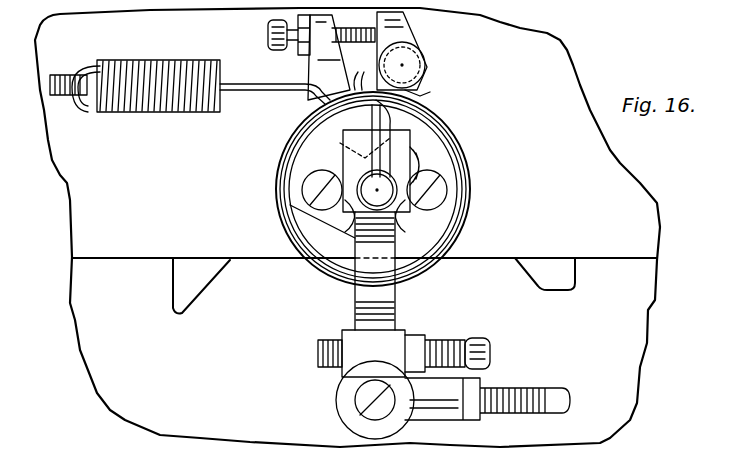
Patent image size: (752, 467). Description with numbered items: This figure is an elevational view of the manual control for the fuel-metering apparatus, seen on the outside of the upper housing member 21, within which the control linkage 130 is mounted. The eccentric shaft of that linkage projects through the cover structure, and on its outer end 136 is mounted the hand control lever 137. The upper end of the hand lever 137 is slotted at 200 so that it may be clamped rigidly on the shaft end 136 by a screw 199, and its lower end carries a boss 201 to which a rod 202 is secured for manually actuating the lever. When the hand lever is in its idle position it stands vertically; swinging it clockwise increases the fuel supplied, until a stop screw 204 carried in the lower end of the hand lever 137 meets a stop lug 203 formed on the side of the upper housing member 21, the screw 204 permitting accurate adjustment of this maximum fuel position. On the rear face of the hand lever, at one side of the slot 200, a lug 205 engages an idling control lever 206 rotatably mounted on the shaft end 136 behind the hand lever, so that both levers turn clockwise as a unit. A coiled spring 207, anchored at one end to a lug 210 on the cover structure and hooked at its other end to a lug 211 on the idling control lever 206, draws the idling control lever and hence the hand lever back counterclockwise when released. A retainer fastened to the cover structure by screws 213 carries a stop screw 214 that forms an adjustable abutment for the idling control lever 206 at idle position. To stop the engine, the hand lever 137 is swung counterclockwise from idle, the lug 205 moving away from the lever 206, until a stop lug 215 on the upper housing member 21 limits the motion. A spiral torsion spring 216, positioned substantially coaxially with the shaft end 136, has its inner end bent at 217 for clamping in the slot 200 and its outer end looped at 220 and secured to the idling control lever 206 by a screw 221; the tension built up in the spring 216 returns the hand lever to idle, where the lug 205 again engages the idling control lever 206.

The upper housing member 21 is at (83, 350).
The control linkage 130 is at (634, 194).
The outer end of the eccentric shaft 136 is at (390, 202).
The hand control lever 137 is at (397, 310).
The screw 199 is at (425, 125).
The slot 200 is at (330, 142).
The boss 201 is at (355, 372).
The rod 202 is at (552, 392).
The stop lug 203 is at (197, 283).
The stop screw 204 is at (330, 345).
The lug 205 is at (340, 152).
The idling control lever 206 is at (405, 22).
The coiled spring 207 is at (150, 112).
The lug 210 is at (60, 96).
The lug 211 is at (352, 80).
The screws 213 is at (305, 188).
The stop screw 214 is at (325, 35).
The stop lug 215 is at (552, 268).
The spiral torsion spring 216 is at (470, 206).
The bent inner end of the torsion spring 217 is at (418, 97).
The looped outer end of the torsion spring 220 is at (425, 52).
The screw 221 is at (406, 66).